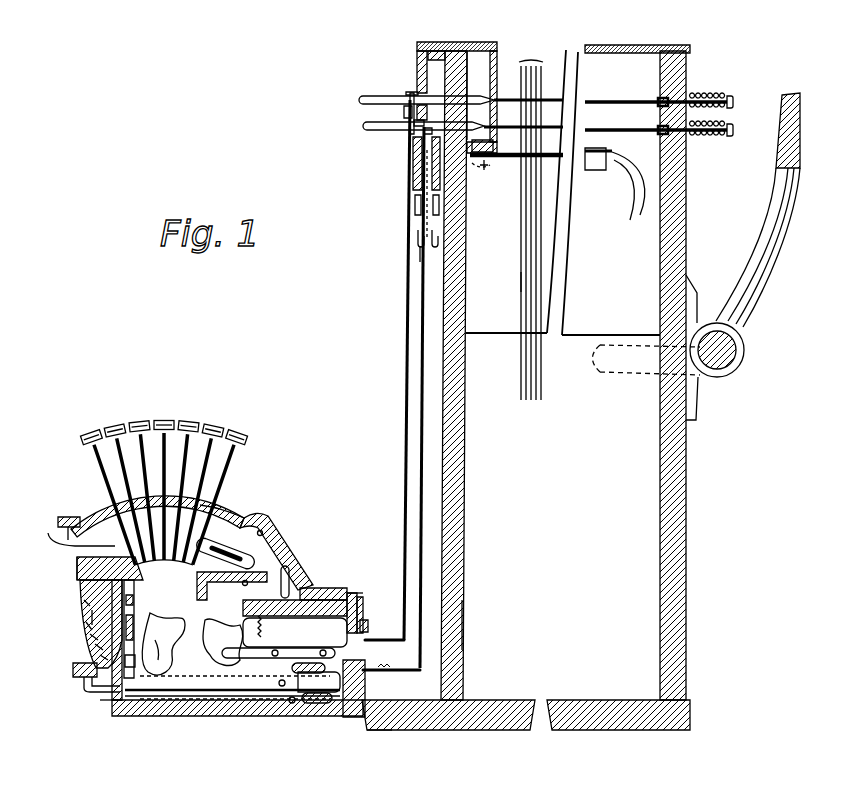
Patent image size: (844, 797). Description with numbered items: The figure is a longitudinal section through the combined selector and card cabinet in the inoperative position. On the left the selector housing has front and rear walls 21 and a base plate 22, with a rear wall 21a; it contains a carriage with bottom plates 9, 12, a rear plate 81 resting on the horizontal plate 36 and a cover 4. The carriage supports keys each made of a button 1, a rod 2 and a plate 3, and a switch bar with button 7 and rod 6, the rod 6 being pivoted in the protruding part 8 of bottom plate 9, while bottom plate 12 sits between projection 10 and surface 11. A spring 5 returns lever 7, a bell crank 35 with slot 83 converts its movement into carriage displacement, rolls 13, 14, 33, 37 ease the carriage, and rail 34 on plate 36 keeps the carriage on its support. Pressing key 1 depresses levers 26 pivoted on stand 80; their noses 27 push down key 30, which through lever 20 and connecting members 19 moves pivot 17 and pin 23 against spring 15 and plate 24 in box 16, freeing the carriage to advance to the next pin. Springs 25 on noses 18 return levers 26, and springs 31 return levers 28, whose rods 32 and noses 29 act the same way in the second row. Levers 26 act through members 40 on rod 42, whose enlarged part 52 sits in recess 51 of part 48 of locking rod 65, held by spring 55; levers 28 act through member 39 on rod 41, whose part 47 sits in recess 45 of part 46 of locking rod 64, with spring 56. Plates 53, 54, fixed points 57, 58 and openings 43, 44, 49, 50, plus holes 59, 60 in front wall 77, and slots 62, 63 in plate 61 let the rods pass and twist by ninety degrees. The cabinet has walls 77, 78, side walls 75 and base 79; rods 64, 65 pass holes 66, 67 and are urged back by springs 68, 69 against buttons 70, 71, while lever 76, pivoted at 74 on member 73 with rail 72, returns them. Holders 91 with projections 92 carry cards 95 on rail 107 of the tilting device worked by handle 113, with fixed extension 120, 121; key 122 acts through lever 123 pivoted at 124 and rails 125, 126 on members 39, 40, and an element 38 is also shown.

The button 1 is at (160, 418).
The rod 2 is at (123, 470).
The plate 3 is at (112, 509).
The cover 4 is at (230, 511).
The spring 5 is at (77, 562).
The rod 6 is at (60, 521).
The button 7 is at (50, 527).
The protruding part 8 is at (141, 560).
The bottom plate 9 is at (292, 562).
The projection 10 is at (86, 592).
The surface 11 is at (88, 604).
The bottom plate 12 is at (356, 595).
The roll 13 is at (93, 626).
The roll 14 is at (80, 565).
The spring 15 is at (96, 634).
The box 16 is at (100, 645).
The pivot 17 is at (104, 656).
The nose 18 is at (125, 660).
The connecting member 19 is at (84, 683).
The lever 20 is at (110, 700).
The housing wall 21 is at (80, 699).
The rear wall 21a is at (388, 730).
The base plate 22 is at (116, 716).
The pin 23 is at (136, 585).
The plate 24 is at (135, 600).
The spring 25 is at (135, 620).
The lever 26 is at (160, 640).
The nose 27 is at (183, 626).
The lever 28 is at (218, 624).
The nose 29 is at (247, 657).
The key 30 is at (212, 690).
The spring 31 is at (266, 626).
The rod 32 is at (272, 646).
The roll 33 is at (241, 581).
The rail 34 is at (366, 624).
The bell crank 35 is at (281, 536).
The horizontal plate 36 is at (322, 589).
The roll 37 is at (330, 600).
The block 38 is at (352, 593).
The member 39 is at (386, 637).
The member 40 is at (393, 673).
The rod 41 is at (406, 496).
The rod 42 is at (421, 483).
The round opening 43 is at (418, 88).
The round opening 44 is at (412, 98).
The recess 45 is at (408, 93).
The part 46 is at (363, 99).
The part 47 is at (404, 110).
The part 48 is at (367, 126).
The round opening 49 is at (414, 126).
The round opening 50 is at (426, 133).
The recess 51 is at (414, 150).
The enlarged part 52 is at (433, 160).
The plate 53 is at (415, 205).
The plate 54 is at (426, 185).
The spring 55 is at (433, 208).
The spring 56 is at (418, 235).
The fixing point 57 is at (420, 255).
The fixing point 58 is at (432, 240).
The hole 59 is at (446, 56).
The hole 60 is at (462, 88).
The plate 61 is at (494, 98).
The slot 62 is at (498, 98).
The slot 63 is at (492, 127).
The locking rod 64 is at (558, 100).
The locking rod 65 is at (560, 127).
The hole 66 is at (660, 99).
The hole 67 is at (660, 127).
The spring 68 is at (712, 96).
The spring 69 is at (712, 137).
The button 70 is at (733, 102).
The button 71 is at (733, 131).
The rail 72 is at (778, 145).
The member 73 is at (697, 285).
The pivot 74 is at (744, 350).
The side wall 75 is at (492, 334).
The lever 76 is at (616, 373).
The front wall 77 is at (463, 432).
The rear wall 78 is at (662, 430).
The base plate 79 is at (501, 705).
The stand 80 is at (310, 668).
The rear plate 81 is at (361, 603).
The slot 83 is at (290, 580).
The holder 91 is at (561, 72).
The transversal projection 92 is at (522, 160).
The card 95 is at (536, 291).
The rail 107 is at (552, 160).
The handle 113 is at (487, 185).
The extension 120 is at (630, 203).
The extension 121 is at (641, 222).
The key 122 is at (73, 668).
The lever 123 is at (150, 700).
The pivot 124 is at (262, 700).
The rail 125 is at (318, 705).
The rail 126 is at (352, 718).